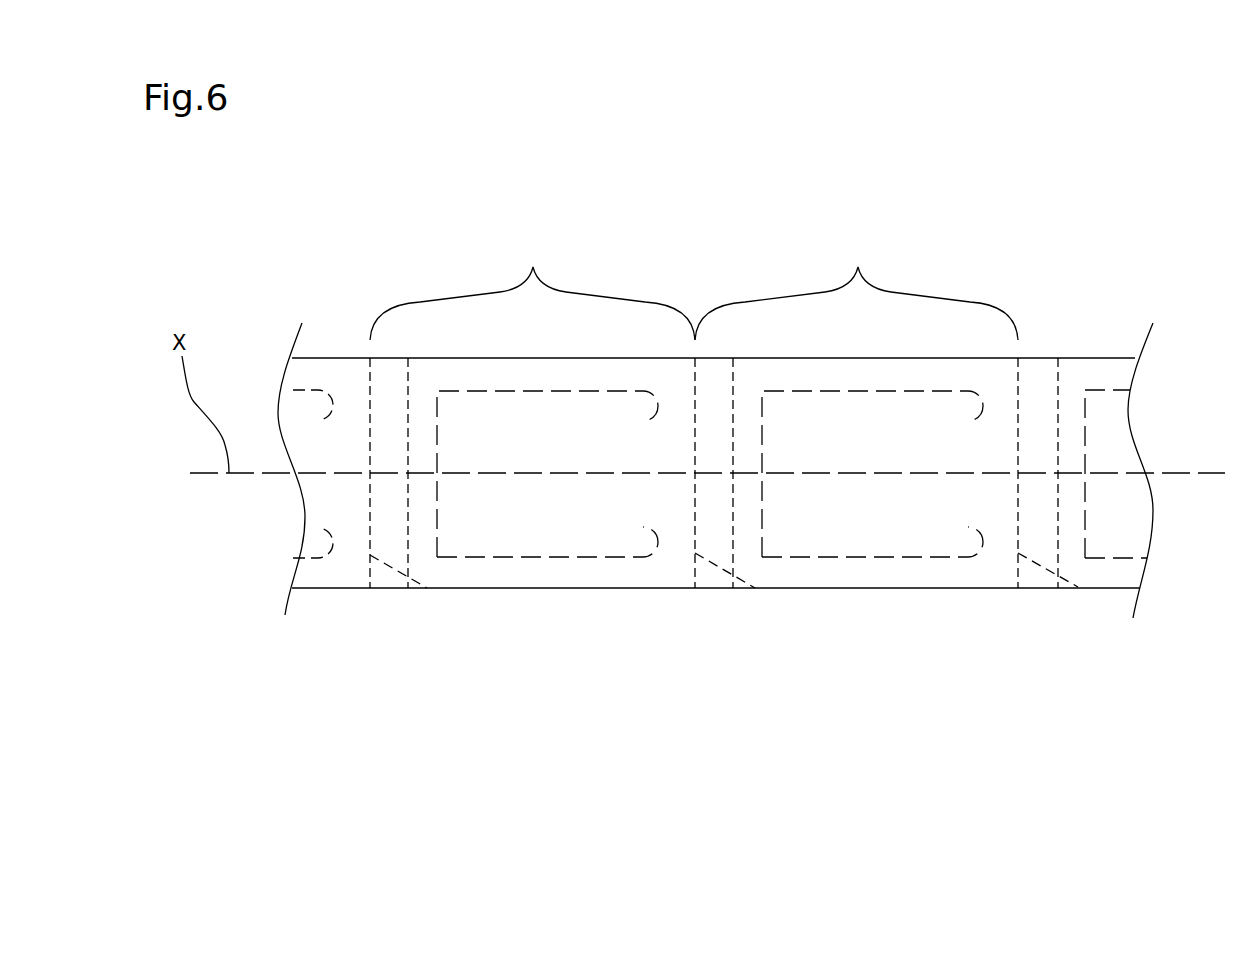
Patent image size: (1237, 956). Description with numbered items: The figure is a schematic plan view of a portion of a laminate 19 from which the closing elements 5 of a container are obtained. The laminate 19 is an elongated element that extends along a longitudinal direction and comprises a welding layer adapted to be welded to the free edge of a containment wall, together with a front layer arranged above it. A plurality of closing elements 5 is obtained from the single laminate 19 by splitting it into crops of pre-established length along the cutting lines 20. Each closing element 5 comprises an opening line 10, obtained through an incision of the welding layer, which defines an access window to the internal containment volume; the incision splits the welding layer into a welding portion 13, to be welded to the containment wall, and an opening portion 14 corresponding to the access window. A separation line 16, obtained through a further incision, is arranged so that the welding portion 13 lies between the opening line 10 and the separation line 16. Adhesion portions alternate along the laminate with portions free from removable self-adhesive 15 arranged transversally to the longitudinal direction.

The closing element 5 is at (694, 289).
The opening line 10 is at (538, 556).
The welding portion 13 is at (408, 425).
The opening portion 14 is at (551, 449).
The portion free from removable self-adhesive 15 is at (390, 520).
The separation line 16 is at (396, 570).
The laminate 19 is at (1030, 288).
The cutting lines 20 is at (695, 396).